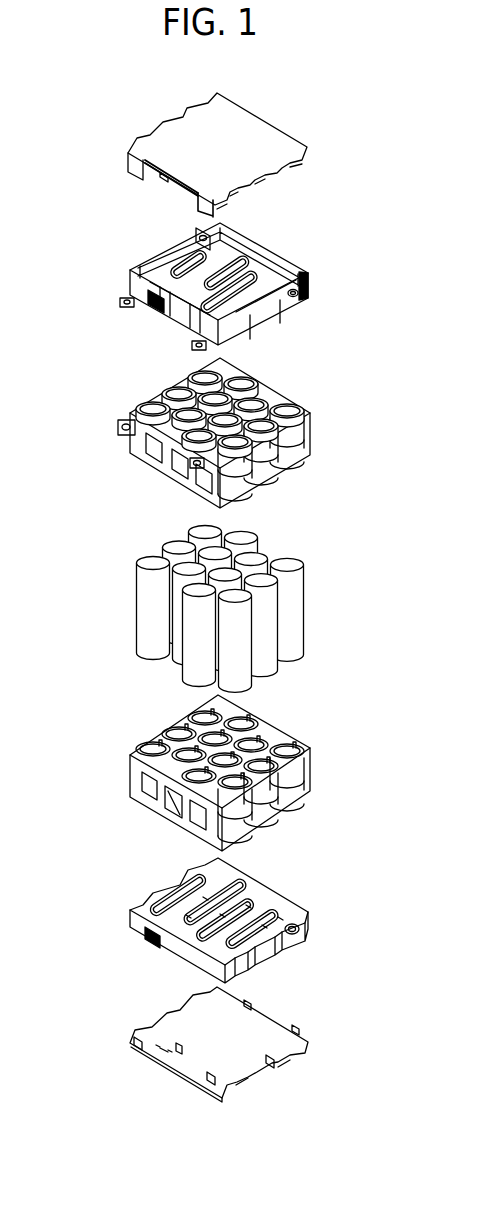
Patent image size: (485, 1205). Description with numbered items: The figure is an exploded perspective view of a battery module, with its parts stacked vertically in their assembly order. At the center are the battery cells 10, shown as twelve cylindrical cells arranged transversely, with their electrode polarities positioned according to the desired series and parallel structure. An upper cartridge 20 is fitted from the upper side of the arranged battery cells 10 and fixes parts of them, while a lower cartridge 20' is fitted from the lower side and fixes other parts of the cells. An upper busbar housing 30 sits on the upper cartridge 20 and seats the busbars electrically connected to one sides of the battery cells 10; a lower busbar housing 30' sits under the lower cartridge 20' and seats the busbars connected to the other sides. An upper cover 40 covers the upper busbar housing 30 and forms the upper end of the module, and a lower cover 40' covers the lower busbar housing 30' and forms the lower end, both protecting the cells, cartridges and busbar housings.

The battery cells 10 is at (290, 587).
The upper cartridge 20 is at (230, 428).
The lower cartridge 20' is at (249, 773).
The upper busbar housing 30 is at (232, 283).
The lower busbar housing 30' is at (236, 914).
The upper cover 40 is at (236, 153).
The lower cover 40' is at (235, 1038).